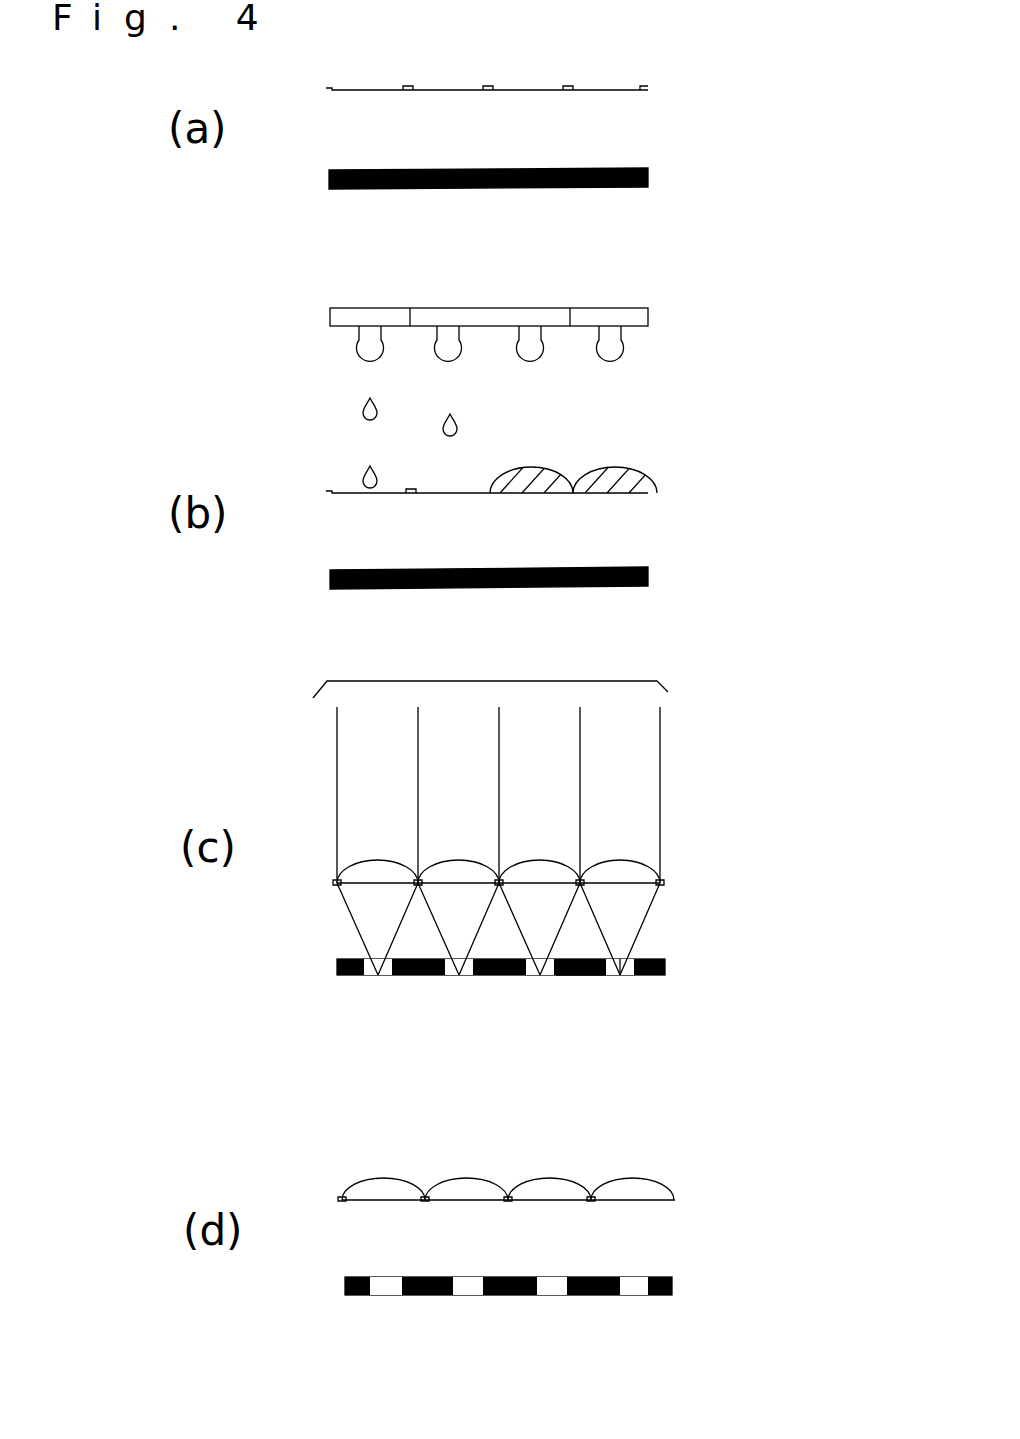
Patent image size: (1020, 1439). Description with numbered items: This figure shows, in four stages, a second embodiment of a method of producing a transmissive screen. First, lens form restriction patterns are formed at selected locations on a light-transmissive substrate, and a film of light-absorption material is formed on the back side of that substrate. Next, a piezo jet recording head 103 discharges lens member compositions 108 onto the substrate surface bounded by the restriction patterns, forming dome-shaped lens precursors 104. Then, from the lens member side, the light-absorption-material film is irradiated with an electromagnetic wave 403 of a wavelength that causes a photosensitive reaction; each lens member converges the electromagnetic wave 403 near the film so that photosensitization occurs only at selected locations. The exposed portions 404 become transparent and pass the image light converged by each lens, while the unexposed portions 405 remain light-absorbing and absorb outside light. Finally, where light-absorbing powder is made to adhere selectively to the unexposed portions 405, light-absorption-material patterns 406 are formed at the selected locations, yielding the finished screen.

The piezo jet recording head 103 is at (648, 318).
The lens member composition 108 is at (362, 410).
The lens precursor 104 is at (632, 474).
The electromagnetic wave 403 is at (490, 758).
The photosensitized portion 404 is at (625, 976).
The unexposed portion 405 is at (580, 976).
The light-absorption-material pattern 406 is at (675, 1286).